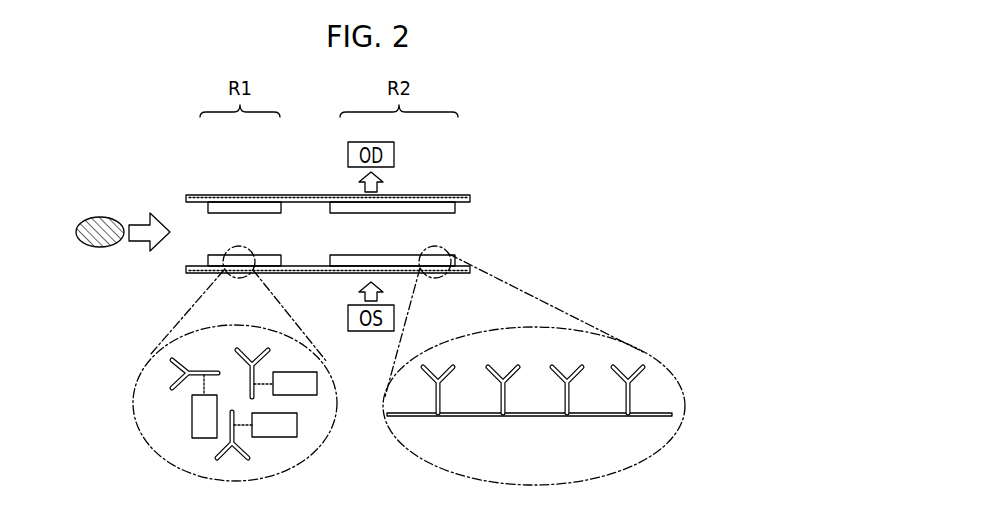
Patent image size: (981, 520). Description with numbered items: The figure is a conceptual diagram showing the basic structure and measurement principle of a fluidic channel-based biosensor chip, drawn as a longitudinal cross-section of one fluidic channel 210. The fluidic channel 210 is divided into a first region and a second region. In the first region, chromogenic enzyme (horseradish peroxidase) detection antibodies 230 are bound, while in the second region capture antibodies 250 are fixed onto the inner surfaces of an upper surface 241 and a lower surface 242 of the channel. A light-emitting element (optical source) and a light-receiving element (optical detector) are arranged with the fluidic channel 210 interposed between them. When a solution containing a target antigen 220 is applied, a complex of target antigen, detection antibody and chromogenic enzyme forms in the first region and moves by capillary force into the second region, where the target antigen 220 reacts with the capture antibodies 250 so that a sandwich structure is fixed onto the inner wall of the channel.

The fluidic channel 210 is at (429, 305).
The target antigen 220 is at (91, 217).
The detection antibodies 230 is at (172, 382).
The upper surface 241 is at (441, 195).
The lower surface 242 is at (456, 274).
The capture antibodies 250 is at (623, 368).